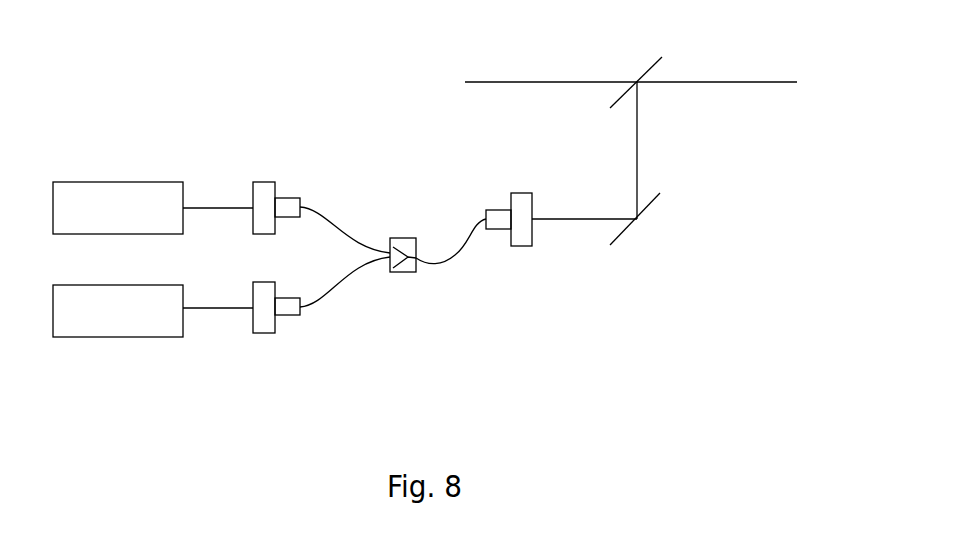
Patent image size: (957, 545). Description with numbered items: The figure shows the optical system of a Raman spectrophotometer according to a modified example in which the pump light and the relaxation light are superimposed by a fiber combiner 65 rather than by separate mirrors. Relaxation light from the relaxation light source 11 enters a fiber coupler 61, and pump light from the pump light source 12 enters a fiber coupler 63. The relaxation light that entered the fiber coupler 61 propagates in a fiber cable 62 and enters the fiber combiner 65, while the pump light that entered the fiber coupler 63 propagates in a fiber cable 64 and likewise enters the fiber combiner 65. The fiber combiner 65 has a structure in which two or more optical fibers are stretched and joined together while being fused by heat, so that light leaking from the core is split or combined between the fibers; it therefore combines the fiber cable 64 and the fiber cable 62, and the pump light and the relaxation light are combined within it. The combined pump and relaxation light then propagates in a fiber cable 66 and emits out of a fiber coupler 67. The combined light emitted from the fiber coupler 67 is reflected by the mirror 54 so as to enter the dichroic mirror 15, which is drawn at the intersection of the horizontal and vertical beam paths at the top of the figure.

The relaxation light source 11 is at (113, 337).
The pump light source 12 is at (113, 182).
The dichroic mirror 15 is at (648, 71).
The mirror 54 is at (628, 232).
The fiber coupler 61 is at (258, 333).
The fiber cable 62 is at (320, 295).
The fiber coupler 63 is at (265, 182).
The fiber cable 64 is at (336, 226).
The fiber combiner 65 is at (405, 238).
The fiber cable 66 is at (462, 251).
The fiber coupler 67 is at (521, 193).